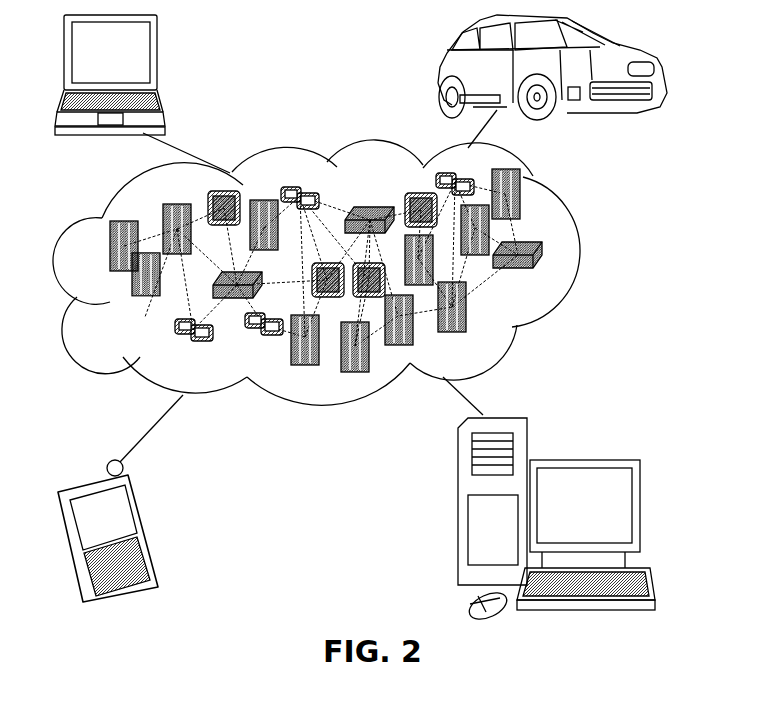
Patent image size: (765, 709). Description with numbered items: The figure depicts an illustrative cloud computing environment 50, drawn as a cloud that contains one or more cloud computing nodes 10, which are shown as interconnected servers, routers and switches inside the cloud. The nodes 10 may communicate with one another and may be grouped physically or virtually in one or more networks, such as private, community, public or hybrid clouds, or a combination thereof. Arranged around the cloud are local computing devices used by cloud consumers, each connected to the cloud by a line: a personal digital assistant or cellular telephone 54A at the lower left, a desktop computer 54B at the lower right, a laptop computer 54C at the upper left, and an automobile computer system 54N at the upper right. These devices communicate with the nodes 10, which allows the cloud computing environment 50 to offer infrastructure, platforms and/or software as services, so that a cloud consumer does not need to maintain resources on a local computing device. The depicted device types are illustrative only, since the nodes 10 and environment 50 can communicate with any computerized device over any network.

The cloud computing node 10 is at (360, 319).
The cloud computing environment 50 is at (583, 255).
The personal digital assistant (PDA) or cellular telephone 54A is at (150, 527).
The desktop computer 54B is at (583, 458).
The laptop computer 54C is at (157, 60).
The automobile computer system 54N is at (443, 70).